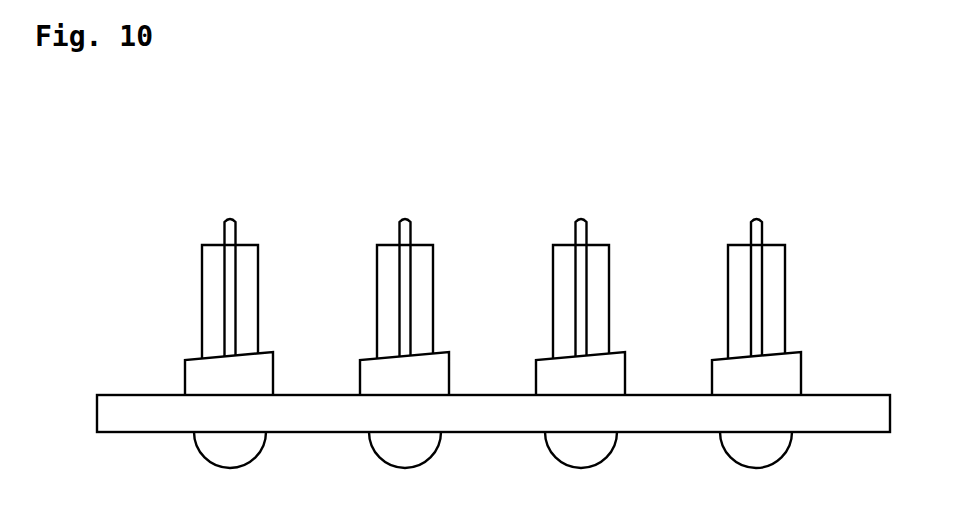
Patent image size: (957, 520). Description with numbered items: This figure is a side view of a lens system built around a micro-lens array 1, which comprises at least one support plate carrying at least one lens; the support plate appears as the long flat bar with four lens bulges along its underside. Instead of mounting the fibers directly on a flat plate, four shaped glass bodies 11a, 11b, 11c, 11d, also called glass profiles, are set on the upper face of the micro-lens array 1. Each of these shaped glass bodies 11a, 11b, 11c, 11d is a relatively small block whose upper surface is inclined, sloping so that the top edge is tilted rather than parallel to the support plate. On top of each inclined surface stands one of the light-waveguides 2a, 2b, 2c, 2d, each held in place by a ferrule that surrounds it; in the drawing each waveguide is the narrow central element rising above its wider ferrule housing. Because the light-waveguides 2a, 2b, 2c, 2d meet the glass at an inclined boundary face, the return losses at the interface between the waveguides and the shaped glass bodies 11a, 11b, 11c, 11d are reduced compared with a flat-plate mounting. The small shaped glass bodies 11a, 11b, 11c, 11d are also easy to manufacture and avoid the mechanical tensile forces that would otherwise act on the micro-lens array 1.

The micro-lens array 1 is at (107, 407).
The light-waveguide 2a is at (229, 216).
The light-waveguide 2b is at (404, 216).
The light-waveguide 2c is at (580, 216).
The light-waveguide 2d is at (756, 216).
The shaped glass body 11a is at (203, 370).
The shaped glass body 11b is at (378, 370).
The shaped glass body 11c is at (553, 370).
The shaped glass body 11d is at (729, 370).